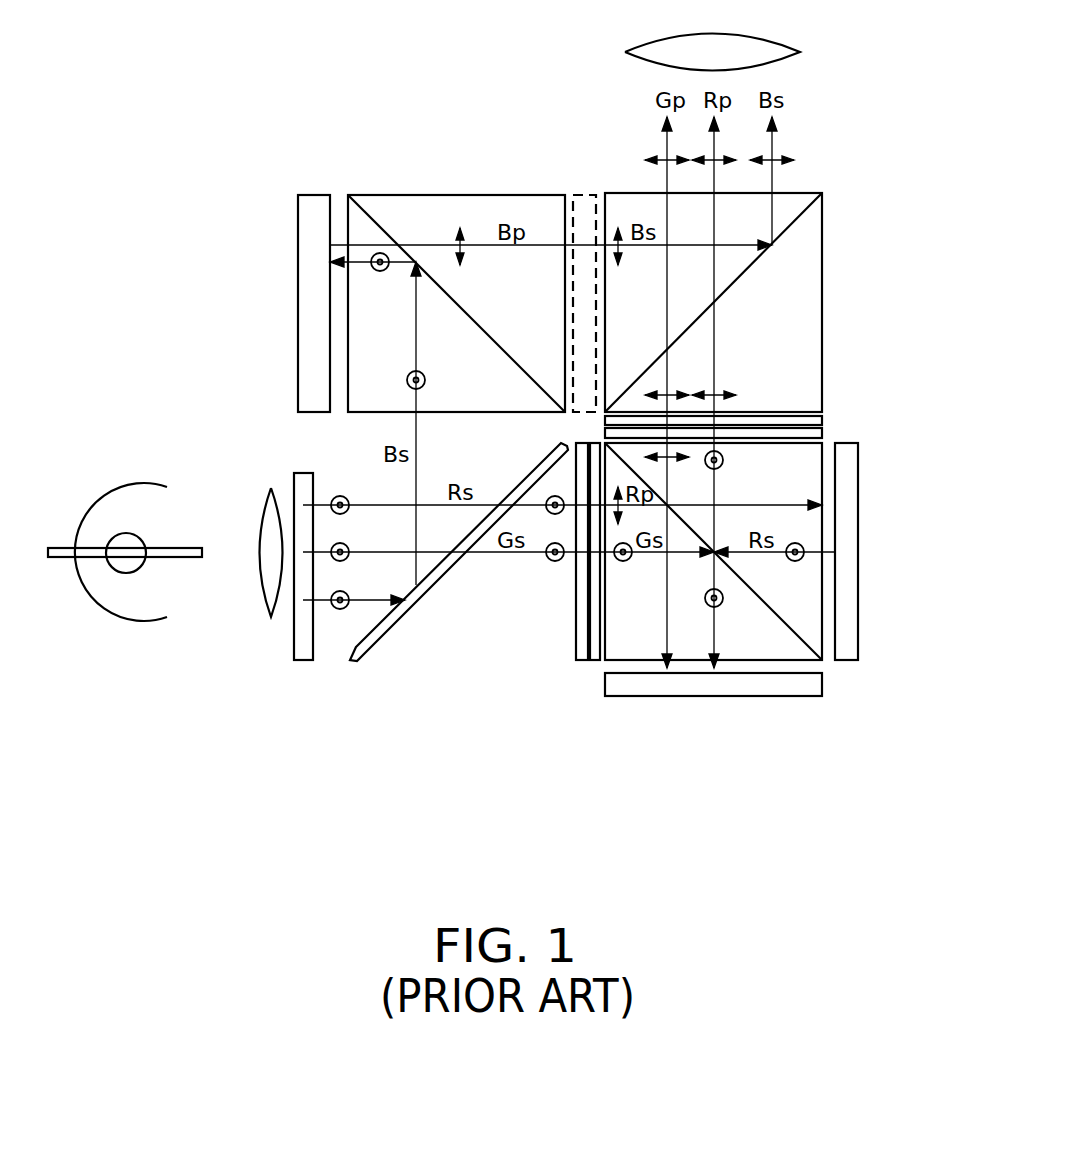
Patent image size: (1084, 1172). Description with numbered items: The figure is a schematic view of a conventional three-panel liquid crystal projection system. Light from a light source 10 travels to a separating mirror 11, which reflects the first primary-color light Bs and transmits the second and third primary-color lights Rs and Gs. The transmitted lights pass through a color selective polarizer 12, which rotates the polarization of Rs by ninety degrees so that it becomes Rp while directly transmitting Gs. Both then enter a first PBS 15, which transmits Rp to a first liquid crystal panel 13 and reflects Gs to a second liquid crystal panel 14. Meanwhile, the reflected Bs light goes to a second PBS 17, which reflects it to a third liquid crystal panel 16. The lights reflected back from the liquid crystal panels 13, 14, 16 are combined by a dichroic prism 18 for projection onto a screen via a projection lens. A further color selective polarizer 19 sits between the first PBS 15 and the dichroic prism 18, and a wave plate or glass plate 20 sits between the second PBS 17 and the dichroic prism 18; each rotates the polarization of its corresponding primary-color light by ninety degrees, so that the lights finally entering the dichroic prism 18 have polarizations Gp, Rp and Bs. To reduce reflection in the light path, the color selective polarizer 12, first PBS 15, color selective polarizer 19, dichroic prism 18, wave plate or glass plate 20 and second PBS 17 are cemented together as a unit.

The light source 10 is at (125, 588).
The separating mirror 11 is at (365, 645).
The color selective polarizer 12 is at (582, 662).
The first liquid crystal panel 13 is at (847, 515).
The second liquid crystal panel 14 is at (670, 685).
The first PBS 15 is at (808, 625).
The third liquid crystal panel 16 is at (310, 243).
The second PBS 17 is at (423, 193).
The dichroic prism 18 is at (823, 303).
The color selective polarizer 19 is at (823, 417).
The wave plate or glass plate 20 is at (583, 193).